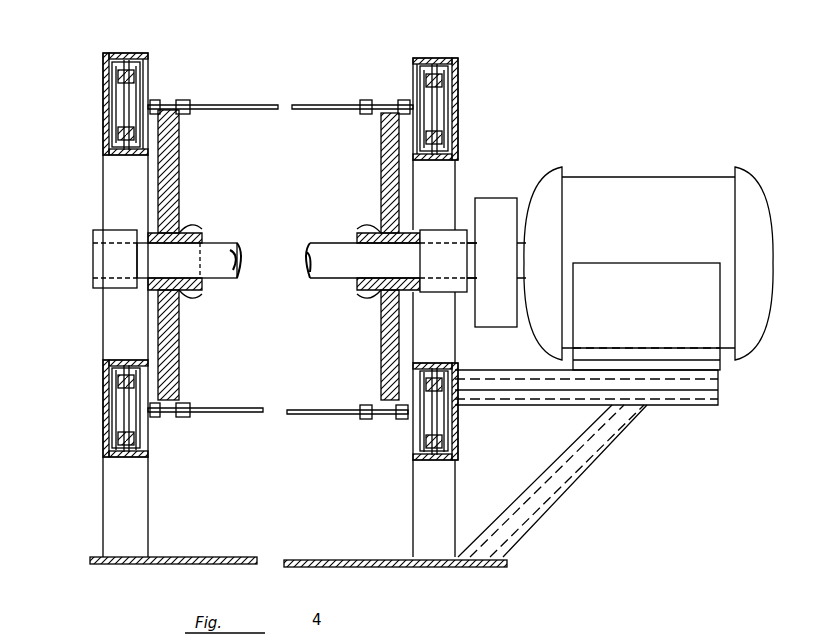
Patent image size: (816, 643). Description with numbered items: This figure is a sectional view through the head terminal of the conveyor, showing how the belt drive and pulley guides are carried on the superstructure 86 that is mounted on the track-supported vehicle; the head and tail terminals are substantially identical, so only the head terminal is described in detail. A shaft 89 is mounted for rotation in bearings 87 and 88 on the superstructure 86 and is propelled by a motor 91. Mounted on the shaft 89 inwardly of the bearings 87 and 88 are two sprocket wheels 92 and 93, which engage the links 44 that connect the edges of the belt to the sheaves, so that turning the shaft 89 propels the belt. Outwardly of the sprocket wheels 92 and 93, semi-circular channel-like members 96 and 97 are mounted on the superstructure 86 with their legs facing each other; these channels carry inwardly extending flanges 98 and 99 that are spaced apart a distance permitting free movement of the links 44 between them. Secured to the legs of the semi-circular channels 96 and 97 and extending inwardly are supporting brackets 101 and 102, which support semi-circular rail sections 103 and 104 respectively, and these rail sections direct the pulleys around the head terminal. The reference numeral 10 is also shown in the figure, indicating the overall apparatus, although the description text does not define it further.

The connecting rod 10 is at (315, 100).
The links 44 is at (378, 409).
The superstructure 86 is at (442, 496).
The bearing 87 is at (93, 230).
The bearing 88 is at (436, 232).
The shaft 89 is at (155, 293).
The motor 91 is at (656, 183).
The sprocket wheel 92 is at (180, 138).
The sprocket wheel 93 is at (397, 100).
The semi-circular channel like member 96 is at (105, 88).
The semi-circular channel like member 97 is at (462, 88).
The inwardly extending flange 98 is at (150, 76).
The inwardly extending flange 99 is at (157, 163).
The supporting bracket 101 is at (119, 53).
The supporting bracket 102 is at (108, 147).
The semi-circular rail section 103 is at (112, 102).
The semi-circular rail section 104 is at (458, 114).